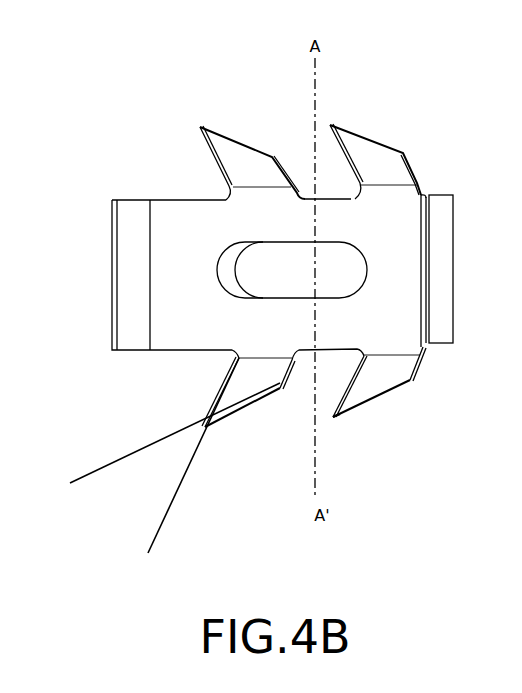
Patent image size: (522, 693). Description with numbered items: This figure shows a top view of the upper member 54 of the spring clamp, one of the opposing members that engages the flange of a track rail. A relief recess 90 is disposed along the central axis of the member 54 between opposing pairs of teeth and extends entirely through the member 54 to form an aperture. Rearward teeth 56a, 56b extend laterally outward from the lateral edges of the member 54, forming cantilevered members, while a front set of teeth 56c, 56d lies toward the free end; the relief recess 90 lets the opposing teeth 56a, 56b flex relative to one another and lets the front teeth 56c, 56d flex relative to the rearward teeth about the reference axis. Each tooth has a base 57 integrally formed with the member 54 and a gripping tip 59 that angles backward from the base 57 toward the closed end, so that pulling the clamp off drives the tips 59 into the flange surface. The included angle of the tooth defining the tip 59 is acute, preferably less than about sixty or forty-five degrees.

The second opposing member 54 is at (204, 251).
The relief recess 90 is at (302, 280).
The tooth 56a is at (232, 156).
The tooth 56b is at (242, 388).
The tooth 56c is at (385, 156).
The tooth 56d is at (385, 385).
The base 57 is at (400, 354).
The gripping tip 59 is at (336, 416).